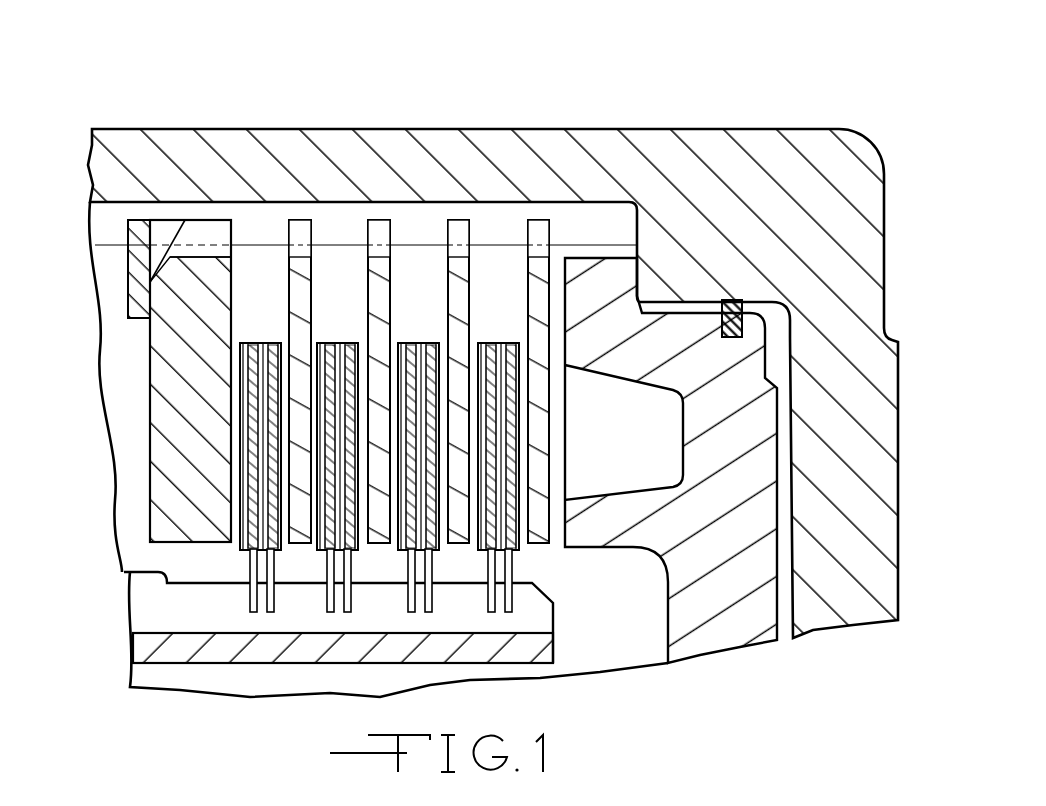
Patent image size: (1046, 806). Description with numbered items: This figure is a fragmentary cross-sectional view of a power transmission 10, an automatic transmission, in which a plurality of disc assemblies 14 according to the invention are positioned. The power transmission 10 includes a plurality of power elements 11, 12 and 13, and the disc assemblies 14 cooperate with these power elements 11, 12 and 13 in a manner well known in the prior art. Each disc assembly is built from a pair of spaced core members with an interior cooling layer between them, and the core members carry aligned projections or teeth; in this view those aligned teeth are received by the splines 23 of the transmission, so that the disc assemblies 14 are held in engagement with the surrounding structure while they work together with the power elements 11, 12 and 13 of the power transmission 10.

The power transmission 10 is at (487, 124).
The power element 11 is at (230, 287).
The power element 12 is at (312, 273).
The power element 13 is at (564, 291).
The disc assemblies 14 is at (442, 351).
The splines 23 is at (125, 572).